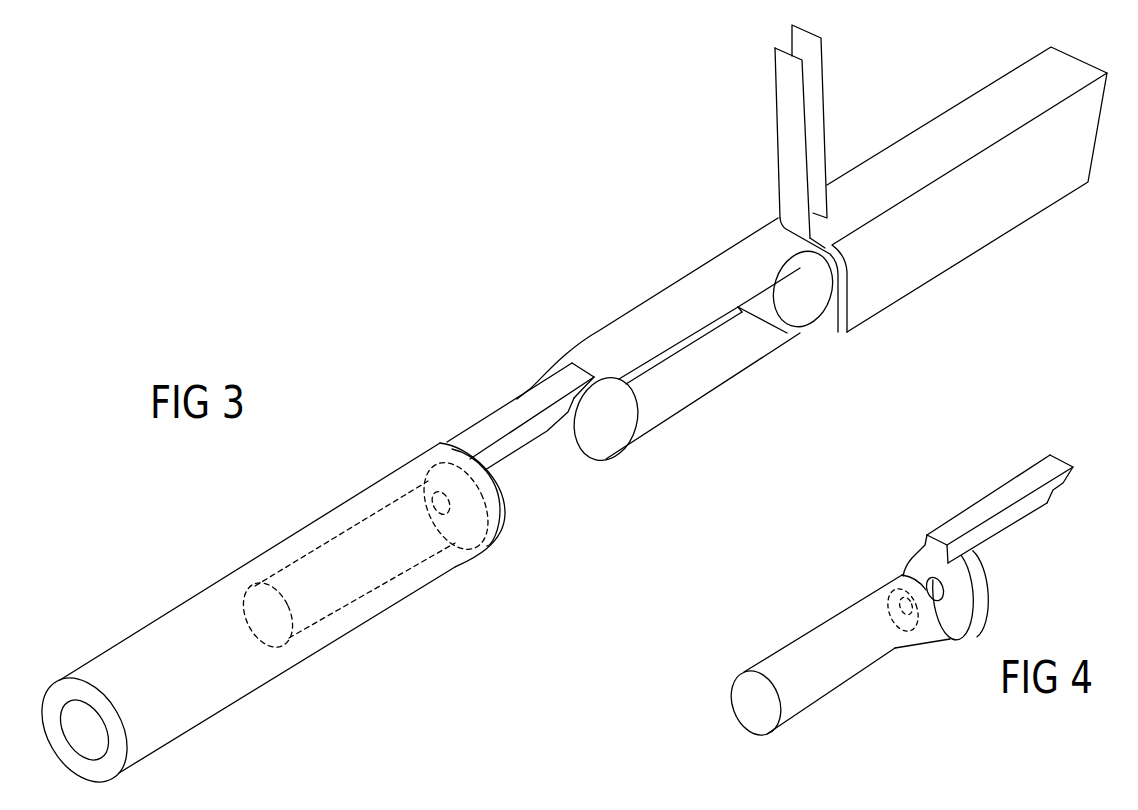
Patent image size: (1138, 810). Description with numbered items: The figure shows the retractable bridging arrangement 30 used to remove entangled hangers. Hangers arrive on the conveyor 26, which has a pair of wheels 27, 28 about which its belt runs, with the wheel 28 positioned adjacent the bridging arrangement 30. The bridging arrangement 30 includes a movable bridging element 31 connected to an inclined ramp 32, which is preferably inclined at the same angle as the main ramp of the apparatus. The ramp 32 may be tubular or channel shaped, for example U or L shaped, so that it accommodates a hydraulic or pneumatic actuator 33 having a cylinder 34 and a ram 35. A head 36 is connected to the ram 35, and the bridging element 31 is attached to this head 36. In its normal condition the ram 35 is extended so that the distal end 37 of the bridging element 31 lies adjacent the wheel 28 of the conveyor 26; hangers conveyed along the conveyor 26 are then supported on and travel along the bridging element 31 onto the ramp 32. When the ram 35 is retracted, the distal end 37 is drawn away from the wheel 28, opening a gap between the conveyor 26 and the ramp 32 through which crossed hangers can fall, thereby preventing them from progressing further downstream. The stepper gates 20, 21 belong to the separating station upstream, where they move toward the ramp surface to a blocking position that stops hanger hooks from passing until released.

In FIG. 3, the stepper gate 20 is at (818, 91).
In FIG. 3, the stepper gate 21 is at (792, 129).
In FIG. 3, the conveyor 26 is at (702, 372).
In FIG. 3, the wheel 27 is at (807, 302).
In FIG. 3, the wheel 28 is at (605, 427).
In FIG. 3, the bridging arrangement 30 is at (411, 387).
In FIG. 3, the bridging element 31 is at (494, 413).
In FIG. 4, the bridging element 31 is at (970, 520).
In FIG. 3, the inclined ramp 32 is at (213, 600).
In FIG. 4, the hydraulic or pneumatic actuator 33 is at (824, 559).
In FIG. 4, the cylinder 34 is at (817, 650).
In FIG. 4, the ram 35 is at (953, 639).
In FIG. 4, the head 36 is at (982, 597).
In FIG. 3, the distal end 37 is at (533, 388).
In FIG. 4, the distal end 37 is at (1027, 478).